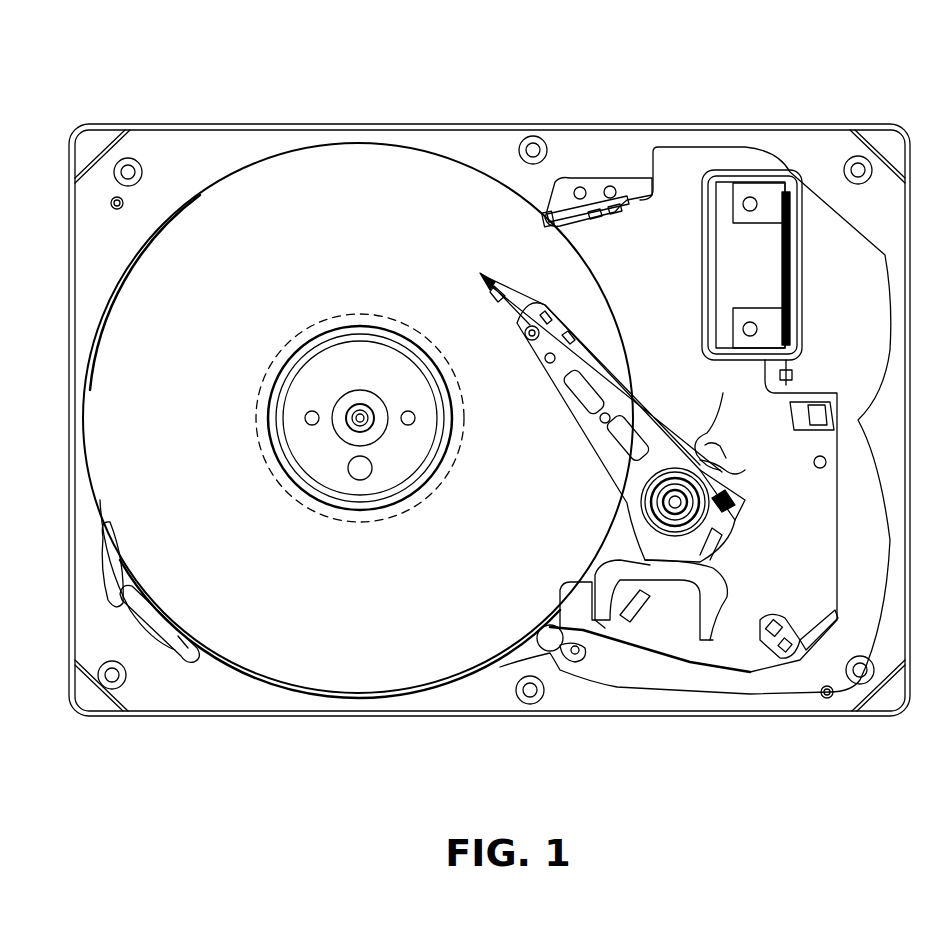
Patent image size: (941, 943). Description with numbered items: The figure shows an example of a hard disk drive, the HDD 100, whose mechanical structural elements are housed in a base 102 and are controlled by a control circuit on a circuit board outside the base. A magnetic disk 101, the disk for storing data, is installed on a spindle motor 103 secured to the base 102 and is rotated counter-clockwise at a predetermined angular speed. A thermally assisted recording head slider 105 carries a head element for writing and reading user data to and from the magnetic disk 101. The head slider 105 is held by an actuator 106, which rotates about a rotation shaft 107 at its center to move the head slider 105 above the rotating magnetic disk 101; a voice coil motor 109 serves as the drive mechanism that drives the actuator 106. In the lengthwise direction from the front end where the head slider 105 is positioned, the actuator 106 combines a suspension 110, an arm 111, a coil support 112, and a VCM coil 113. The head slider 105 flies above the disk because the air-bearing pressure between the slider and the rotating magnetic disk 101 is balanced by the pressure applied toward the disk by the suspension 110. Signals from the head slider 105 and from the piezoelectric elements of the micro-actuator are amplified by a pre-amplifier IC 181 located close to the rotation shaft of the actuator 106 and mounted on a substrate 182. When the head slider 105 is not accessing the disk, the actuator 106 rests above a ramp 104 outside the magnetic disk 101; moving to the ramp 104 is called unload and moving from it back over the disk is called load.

The HDD 100 is at (573, 102).
The magnetic disk 101 is at (606, 296).
The base 102 is at (412, 715).
The spindle motor 103 is at (348, 522).
The ramp 104 is at (548, 222).
The thermally assisted recording head slider 105 is at (500, 282).
The actuator 106 is at (542, 386).
The rotation shaft 107 is at (658, 505).
The voice coil motor 109 is at (617, 660).
The suspension 110 is at (517, 316).
The arm 111 is at (585, 435).
The coil support 112 is at (840, 566).
The VCM coil 113 is at (712, 640).
The pre-amplifier IC 181 is at (722, 448).
The substrate 182 is at (728, 468).